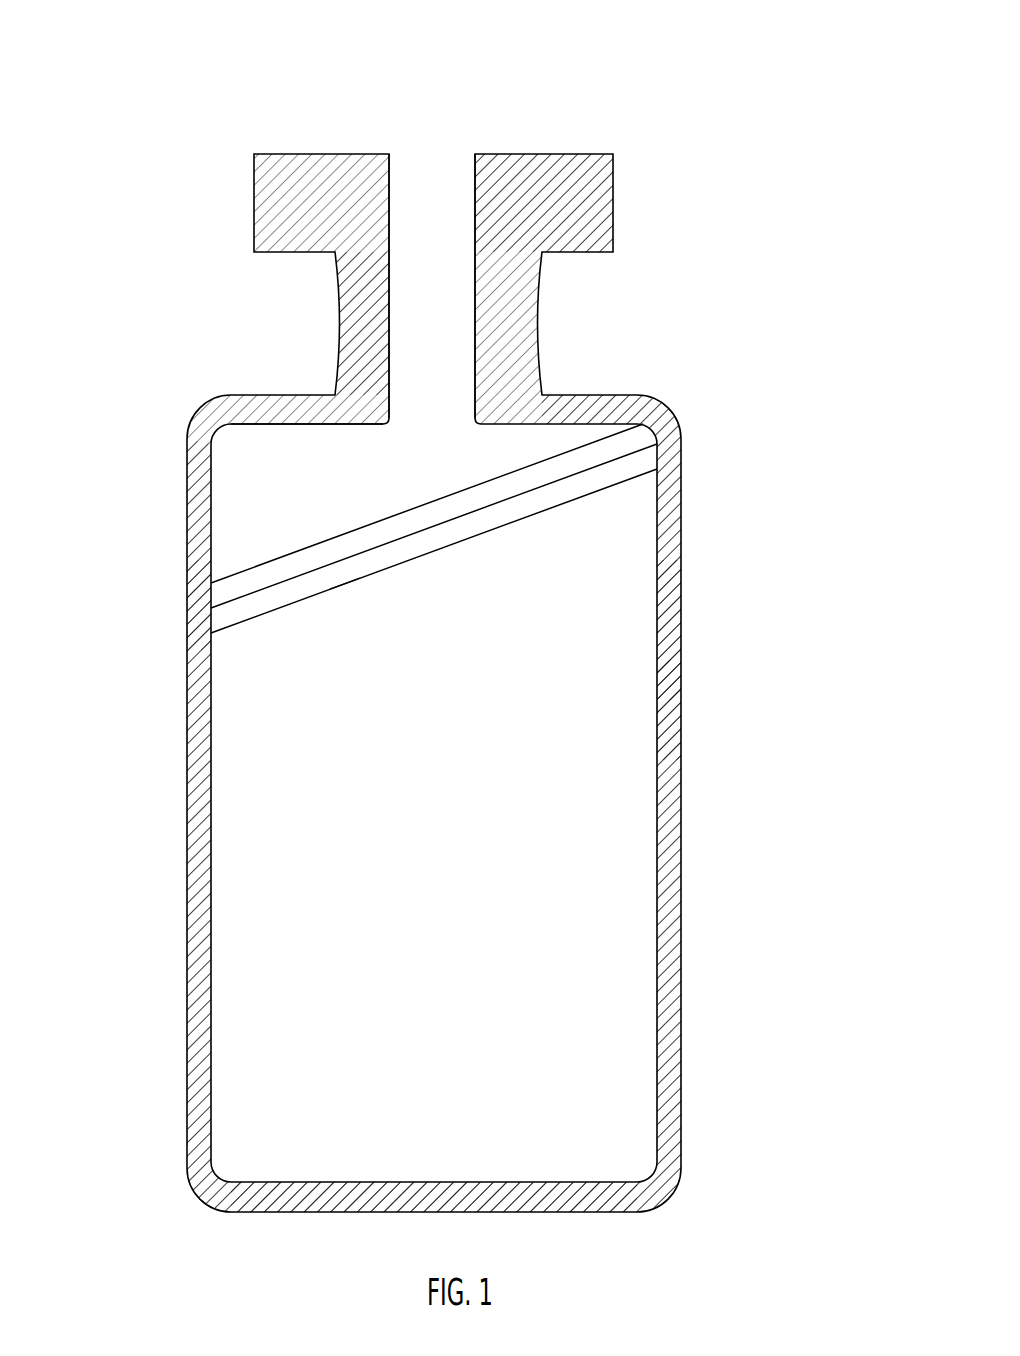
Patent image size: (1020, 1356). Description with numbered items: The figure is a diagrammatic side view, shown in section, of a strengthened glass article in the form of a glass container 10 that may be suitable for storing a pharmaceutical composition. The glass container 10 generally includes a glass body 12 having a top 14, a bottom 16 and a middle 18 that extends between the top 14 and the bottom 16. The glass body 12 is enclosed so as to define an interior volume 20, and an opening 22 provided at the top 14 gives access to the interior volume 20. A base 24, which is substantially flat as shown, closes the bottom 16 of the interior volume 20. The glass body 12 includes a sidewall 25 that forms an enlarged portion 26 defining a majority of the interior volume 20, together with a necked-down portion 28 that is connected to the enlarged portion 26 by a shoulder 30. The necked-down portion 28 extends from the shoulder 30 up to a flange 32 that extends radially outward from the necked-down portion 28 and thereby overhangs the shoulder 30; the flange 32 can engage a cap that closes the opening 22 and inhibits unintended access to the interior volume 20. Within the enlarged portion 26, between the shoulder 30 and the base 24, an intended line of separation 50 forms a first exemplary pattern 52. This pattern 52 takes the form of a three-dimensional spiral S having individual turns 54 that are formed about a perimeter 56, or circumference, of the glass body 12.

The glass container 10 is at (436, 640).
The glass body 12 is at (429, 802).
The top 14 is at (563, 58).
The bottom 16 is at (556, 1240).
The middle 18 is at (162, 740).
The interior volume 20 is at (645, 628).
The opening 22 is at (439, 177).
The base 24 is at (465, 1200).
The sidewall 25 is at (192, 628).
The enlarged portion 26 is at (694, 945).
The necked-down portion 28 is at (338, 298).
The shoulder 30 is at (601, 372).
The flange 32 is at (633, 192).
The intended line of separation 50 is at (434, 555).
The pattern 52 is at (291, 458).
The turns 54 is at (535, 515).
The perimeter 56 is at (680, 690).
The three-dimensional spiral S is at (338, 605).